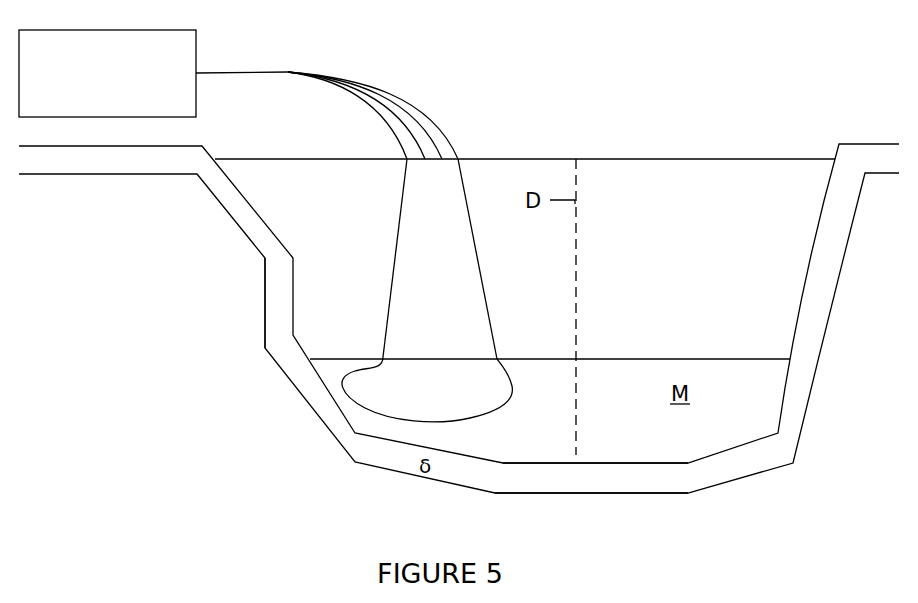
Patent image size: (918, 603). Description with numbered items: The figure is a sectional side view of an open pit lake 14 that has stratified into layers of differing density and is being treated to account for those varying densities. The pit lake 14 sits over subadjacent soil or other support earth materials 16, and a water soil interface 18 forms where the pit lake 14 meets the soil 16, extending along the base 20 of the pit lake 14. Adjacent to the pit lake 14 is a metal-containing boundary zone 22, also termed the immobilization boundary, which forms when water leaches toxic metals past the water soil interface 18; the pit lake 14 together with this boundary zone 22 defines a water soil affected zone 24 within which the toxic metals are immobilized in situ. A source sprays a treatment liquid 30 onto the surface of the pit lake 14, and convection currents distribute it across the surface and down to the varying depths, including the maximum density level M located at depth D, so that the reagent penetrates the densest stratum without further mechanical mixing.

The pit lake 14 is at (685, 211).
The soil 16 is at (265, 268).
The water soil interface 18 is at (653, 463).
The base 20 is at (538, 507).
The metal-containing boundary zone 22 is at (233, 202).
The water soil affected zone 24 is at (273, 237).
The treatment liquid 30 is at (288, 73).